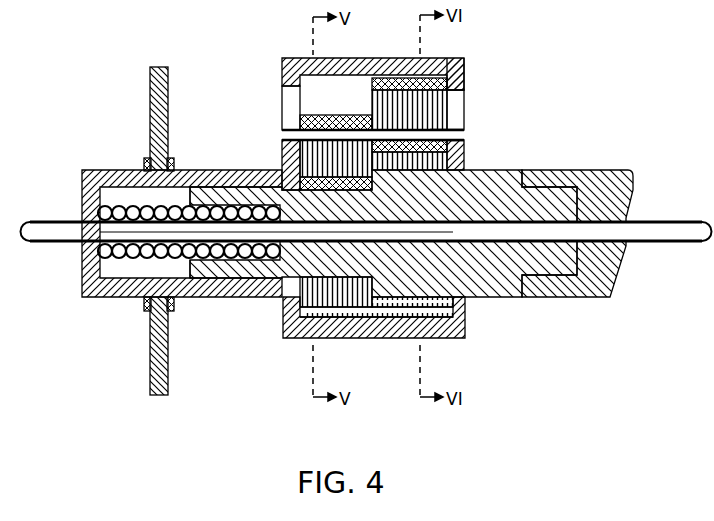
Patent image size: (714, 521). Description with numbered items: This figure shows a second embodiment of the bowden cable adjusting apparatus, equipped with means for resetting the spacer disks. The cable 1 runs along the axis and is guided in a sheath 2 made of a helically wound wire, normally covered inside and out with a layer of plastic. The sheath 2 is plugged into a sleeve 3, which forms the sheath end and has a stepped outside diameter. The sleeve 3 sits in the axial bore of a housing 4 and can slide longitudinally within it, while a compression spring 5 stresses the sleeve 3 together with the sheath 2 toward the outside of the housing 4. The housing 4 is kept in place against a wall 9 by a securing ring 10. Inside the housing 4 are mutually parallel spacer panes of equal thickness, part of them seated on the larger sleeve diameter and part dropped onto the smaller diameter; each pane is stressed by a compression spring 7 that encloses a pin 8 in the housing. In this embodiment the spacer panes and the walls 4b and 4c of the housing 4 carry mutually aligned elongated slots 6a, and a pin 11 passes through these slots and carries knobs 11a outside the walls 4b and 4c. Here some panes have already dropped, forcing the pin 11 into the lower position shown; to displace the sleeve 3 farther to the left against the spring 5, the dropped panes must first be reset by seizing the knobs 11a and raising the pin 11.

The cable 1 is at (672, 220).
The sheath 2 is at (594, 188).
The sleeve 3 is at (497, 190).
The housing 4 is at (406, 60).
The wall 4b is at (290, 165).
The wall 4c is at (462, 72).
The compression spring 5 is at (100, 214).
The elongated slot 6a is at (372, 100).
The compression spring 7 is at (352, 300).
The pin 8 is at (452, 310).
The wall 9 is at (148, 352).
The securing ring 10 is at (148, 165).
The pin 11 is at (449, 136).
The knobs 11a is at (282, 132).